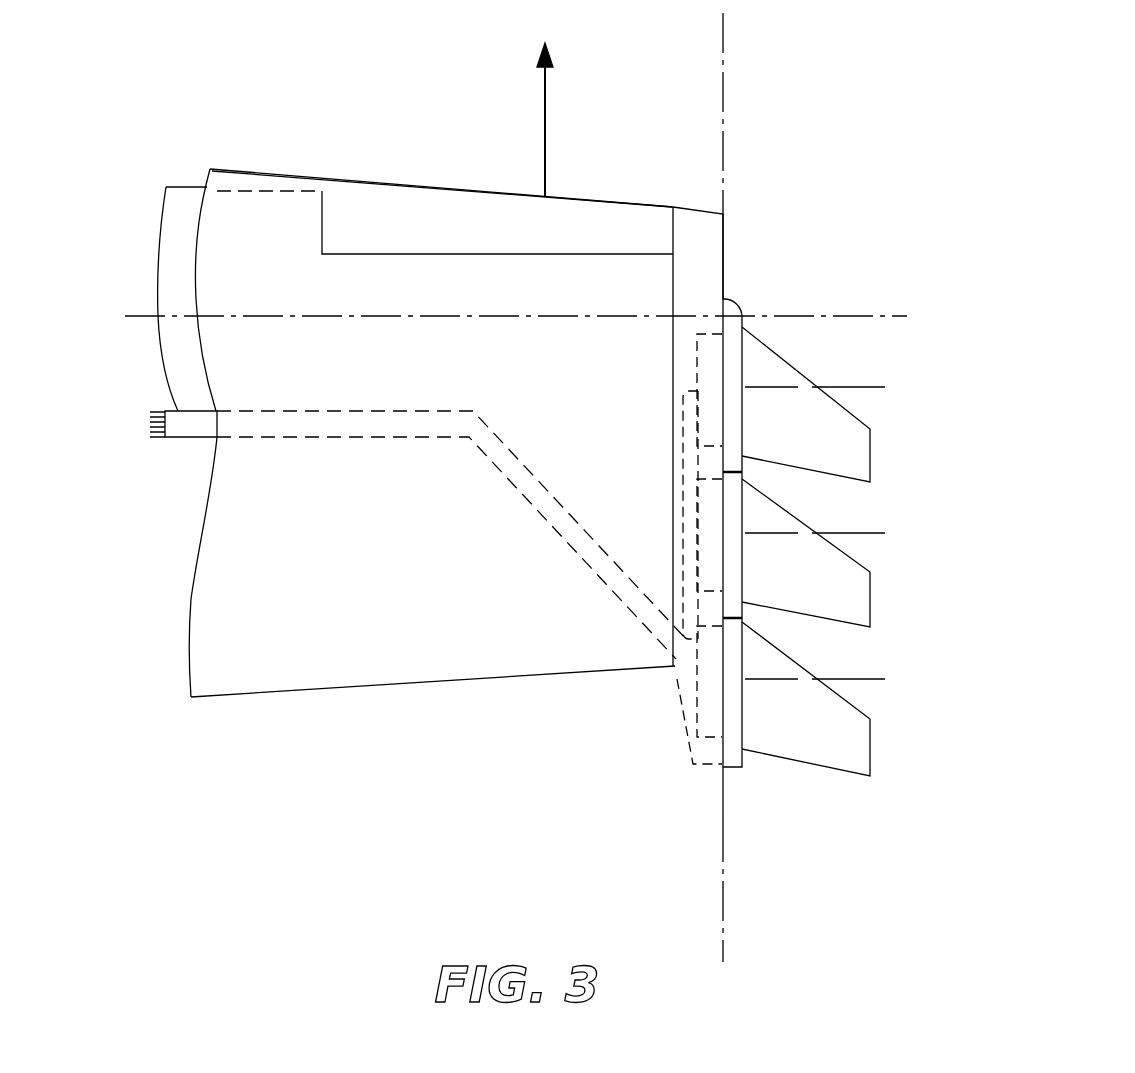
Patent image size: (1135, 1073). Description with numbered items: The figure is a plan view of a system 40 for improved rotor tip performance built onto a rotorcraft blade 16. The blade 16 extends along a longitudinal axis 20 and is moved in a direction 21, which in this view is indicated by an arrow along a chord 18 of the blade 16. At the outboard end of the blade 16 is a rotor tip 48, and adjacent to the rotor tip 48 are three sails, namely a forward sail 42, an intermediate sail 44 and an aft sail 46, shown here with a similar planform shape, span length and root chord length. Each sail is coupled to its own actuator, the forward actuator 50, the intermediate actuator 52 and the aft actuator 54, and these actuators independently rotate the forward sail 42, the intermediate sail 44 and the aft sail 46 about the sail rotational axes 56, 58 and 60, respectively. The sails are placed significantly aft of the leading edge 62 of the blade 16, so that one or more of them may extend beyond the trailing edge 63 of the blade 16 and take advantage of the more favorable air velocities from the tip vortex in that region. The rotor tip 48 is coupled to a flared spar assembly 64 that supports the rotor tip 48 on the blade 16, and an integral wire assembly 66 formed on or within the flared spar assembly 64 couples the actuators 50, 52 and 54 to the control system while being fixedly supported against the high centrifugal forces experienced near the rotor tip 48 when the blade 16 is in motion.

The rotorcraft blade 16 is at (262, 222).
The chord 18 is at (727, 877).
The longitudinal axis 20 is at (798, 317).
The direction 21 is at (547, 102).
The system 40 is at (866, 86).
The forward sail 42 is at (812, 446).
The intermediate sail 44 is at (814, 591).
The aft sail 46 is at (814, 736).
The rotor tip 48 is at (697, 212).
The forward actuator 50 is at (697, 378).
The intermediate actuator 52 is at (698, 524).
The aft actuator 54 is at (690, 728).
The sail rotational axis 56 is at (855, 388).
The sail rotational axis 58 is at (855, 534).
The sail rotational axis 60 is at (855, 680).
The leading edge 62 is at (603, 200).
The trailing edge 63 is at (432, 685).
The flared spar assembly 64 is at (170, 230).
The integral wire assembly 66 is at (188, 440).